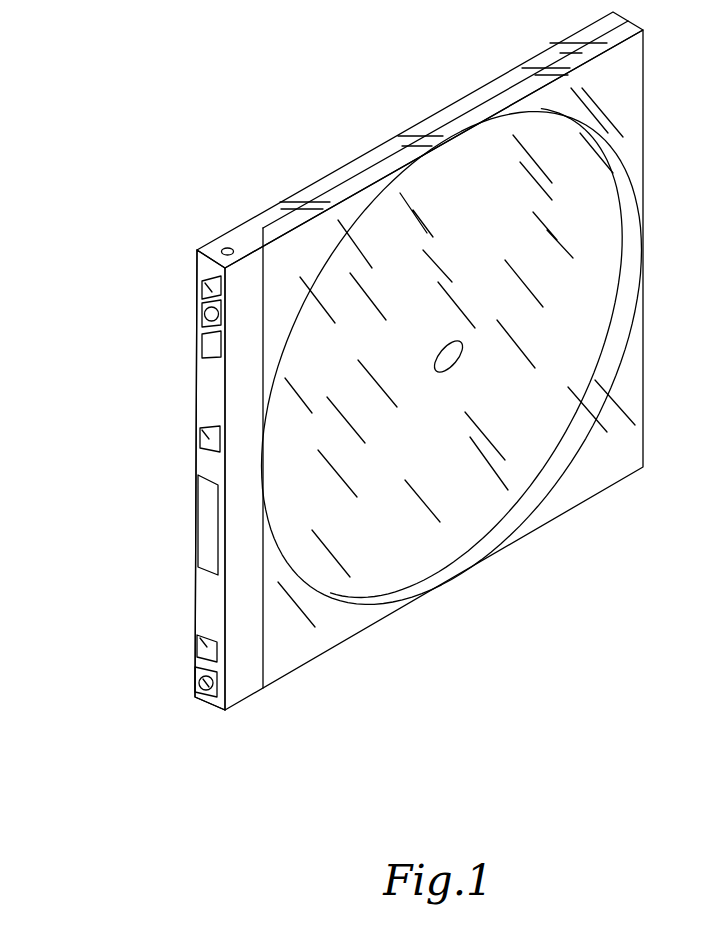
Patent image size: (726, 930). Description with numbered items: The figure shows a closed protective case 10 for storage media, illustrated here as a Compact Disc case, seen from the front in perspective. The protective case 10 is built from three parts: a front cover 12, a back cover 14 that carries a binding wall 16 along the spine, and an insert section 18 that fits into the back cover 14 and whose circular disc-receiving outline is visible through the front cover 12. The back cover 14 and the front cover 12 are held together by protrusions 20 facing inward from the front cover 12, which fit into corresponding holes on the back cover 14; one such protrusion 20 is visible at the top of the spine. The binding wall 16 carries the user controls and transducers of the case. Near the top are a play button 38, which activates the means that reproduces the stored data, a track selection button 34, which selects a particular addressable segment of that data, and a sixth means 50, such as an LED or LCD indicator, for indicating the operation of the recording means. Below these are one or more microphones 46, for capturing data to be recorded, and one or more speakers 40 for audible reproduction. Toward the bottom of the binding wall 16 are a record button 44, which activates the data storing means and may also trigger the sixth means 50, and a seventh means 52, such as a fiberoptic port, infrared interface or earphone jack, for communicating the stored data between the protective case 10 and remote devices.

The protective case 10 is at (353, 108).
The front cover 12 is at (567, 273).
The back cover 14 is at (503, 82).
The binding wall 16 is at (203, 593).
The insert section 18 is at (247, 303).
The protrusions 20 is at (229, 247).
The track selection button 34 is at (204, 312).
The play button 38 is at (203, 282).
The speakers 40 is at (203, 525).
The record button 44 is at (203, 638).
The microphones 46 is at (202, 432).
The sixth means 50 is at (203, 347).
The seventh means 52 is at (200, 675).